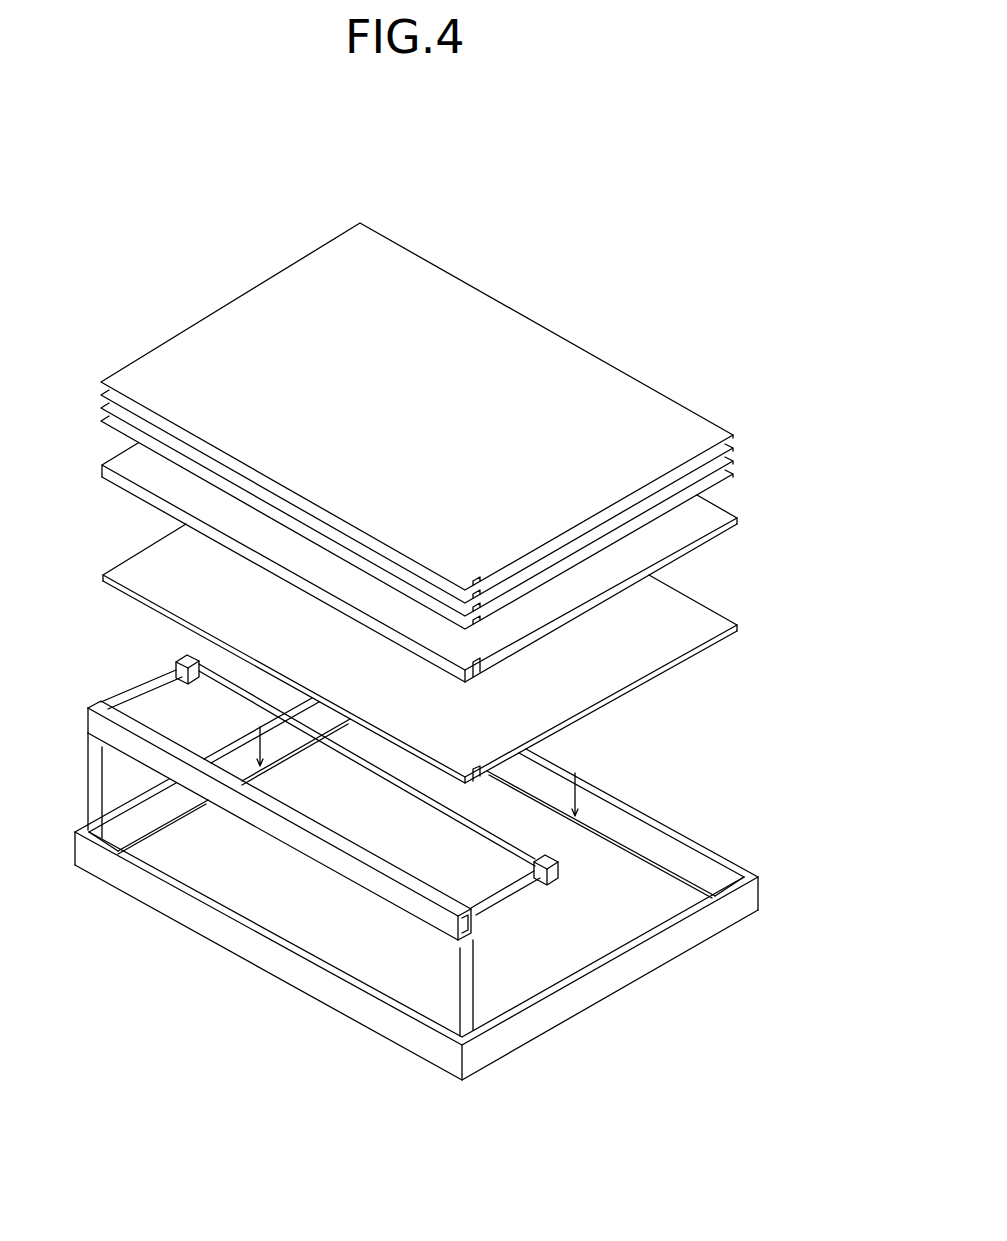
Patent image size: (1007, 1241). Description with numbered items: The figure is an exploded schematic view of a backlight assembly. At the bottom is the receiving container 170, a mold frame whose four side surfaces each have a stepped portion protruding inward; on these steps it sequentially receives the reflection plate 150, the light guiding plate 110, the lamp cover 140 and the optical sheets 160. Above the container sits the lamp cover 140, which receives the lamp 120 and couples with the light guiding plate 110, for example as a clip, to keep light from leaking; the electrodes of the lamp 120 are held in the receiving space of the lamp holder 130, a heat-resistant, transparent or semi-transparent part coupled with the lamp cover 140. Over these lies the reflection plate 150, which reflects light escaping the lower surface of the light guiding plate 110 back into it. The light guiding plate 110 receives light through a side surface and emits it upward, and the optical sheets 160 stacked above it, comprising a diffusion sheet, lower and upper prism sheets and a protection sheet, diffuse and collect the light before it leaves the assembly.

The light guiding plate 110 is at (100, 471).
The lamp 120 is at (385, 783).
The lamp holder 130 is at (177, 670).
The lamp cover 140 is at (92, 723).
The reflection plate 150 is at (108, 574).
The optical sheets 160 is at (90, 372).
The receiving container 170 is at (690, 943).